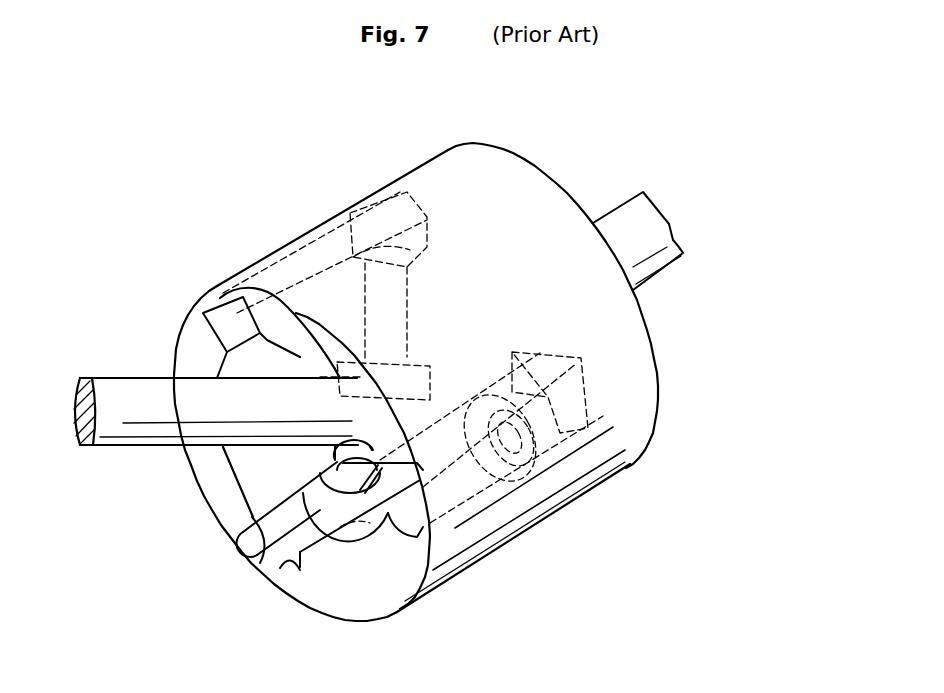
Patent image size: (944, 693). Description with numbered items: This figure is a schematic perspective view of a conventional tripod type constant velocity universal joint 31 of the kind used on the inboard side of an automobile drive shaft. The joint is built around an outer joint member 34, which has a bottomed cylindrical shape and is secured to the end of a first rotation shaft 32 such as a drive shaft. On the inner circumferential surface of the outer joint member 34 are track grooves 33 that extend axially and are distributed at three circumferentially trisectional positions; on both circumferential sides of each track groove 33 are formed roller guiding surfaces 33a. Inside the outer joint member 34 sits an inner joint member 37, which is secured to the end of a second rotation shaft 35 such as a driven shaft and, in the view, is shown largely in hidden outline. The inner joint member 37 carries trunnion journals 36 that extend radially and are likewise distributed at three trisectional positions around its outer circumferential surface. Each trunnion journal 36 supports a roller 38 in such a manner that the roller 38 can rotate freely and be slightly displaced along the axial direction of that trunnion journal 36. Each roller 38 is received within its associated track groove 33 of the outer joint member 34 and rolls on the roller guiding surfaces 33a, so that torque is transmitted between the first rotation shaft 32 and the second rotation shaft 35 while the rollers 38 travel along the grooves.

The tripod type constant velocity universal joint 31 is at (622, 494).
The first rotation shaft 32 is at (628, 217).
The track groove 33 is at (232, 324).
The roller guiding surface 33a is at (263, 532).
The outer joint member 34 is at (528, 188).
The second rotation shaft 35 is at (130, 393).
The trunnion journal 36 is at (327, 255).
The inner joint member 37 is at (432, 373).
The roller 38 is at (389, 215).